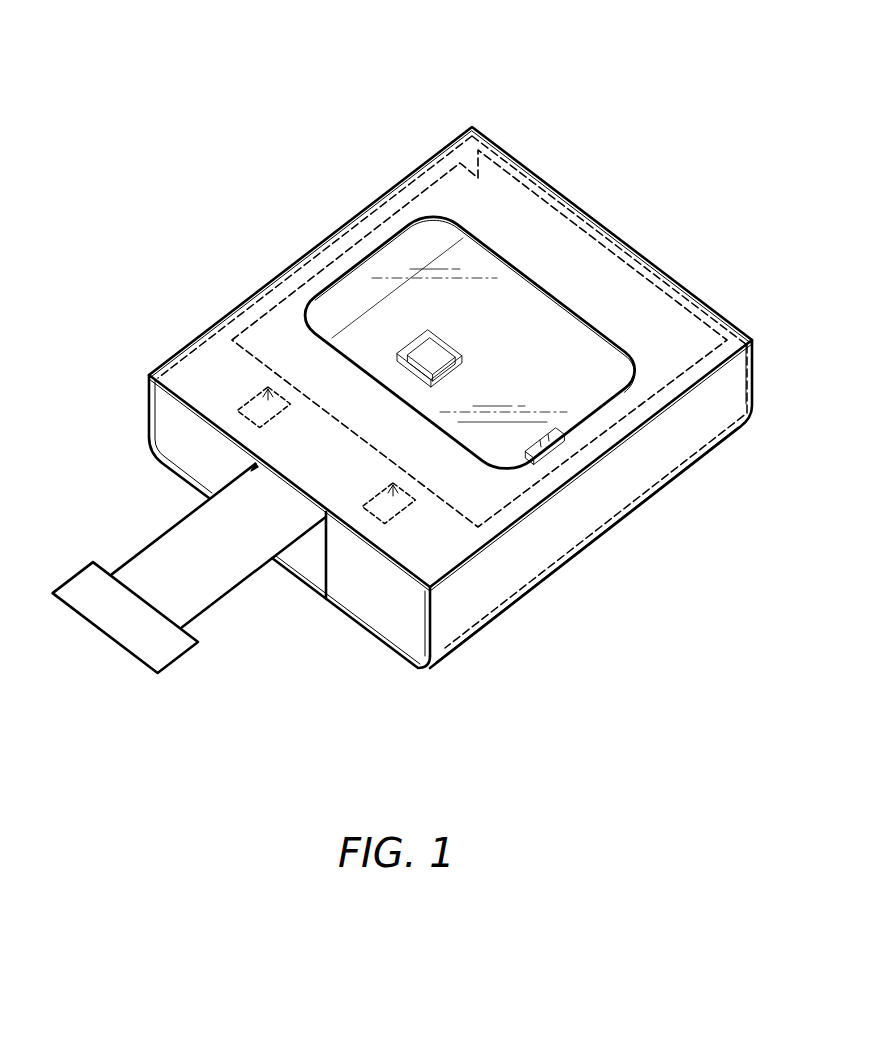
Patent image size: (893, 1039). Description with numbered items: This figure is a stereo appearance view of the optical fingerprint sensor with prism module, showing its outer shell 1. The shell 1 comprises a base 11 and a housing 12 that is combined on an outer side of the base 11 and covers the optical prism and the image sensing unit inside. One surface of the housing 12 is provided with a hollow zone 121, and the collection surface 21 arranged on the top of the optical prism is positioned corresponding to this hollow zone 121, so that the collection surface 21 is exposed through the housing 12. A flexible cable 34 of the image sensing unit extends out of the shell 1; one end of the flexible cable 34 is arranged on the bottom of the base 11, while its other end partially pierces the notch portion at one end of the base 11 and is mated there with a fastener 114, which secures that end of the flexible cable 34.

The shell 1 is at (402, 345).
The base 11 is at (433, 173).
The housing 12 is at (450, 504).
The fastener 114 is at (312, 573).
The hollow zone 121 is at (397, 276).
The collection surface 21 is at (568, 358).
The flexible cable 34 is at (163, 562).